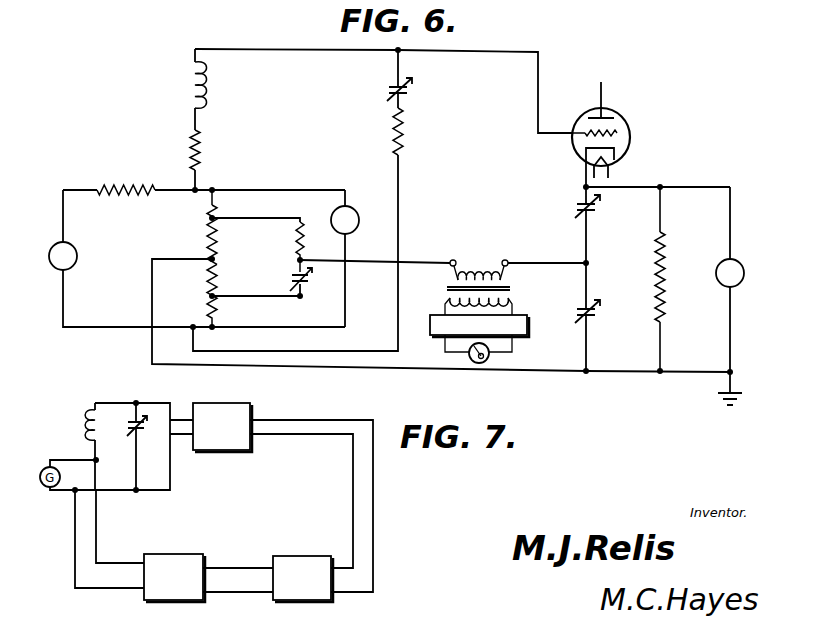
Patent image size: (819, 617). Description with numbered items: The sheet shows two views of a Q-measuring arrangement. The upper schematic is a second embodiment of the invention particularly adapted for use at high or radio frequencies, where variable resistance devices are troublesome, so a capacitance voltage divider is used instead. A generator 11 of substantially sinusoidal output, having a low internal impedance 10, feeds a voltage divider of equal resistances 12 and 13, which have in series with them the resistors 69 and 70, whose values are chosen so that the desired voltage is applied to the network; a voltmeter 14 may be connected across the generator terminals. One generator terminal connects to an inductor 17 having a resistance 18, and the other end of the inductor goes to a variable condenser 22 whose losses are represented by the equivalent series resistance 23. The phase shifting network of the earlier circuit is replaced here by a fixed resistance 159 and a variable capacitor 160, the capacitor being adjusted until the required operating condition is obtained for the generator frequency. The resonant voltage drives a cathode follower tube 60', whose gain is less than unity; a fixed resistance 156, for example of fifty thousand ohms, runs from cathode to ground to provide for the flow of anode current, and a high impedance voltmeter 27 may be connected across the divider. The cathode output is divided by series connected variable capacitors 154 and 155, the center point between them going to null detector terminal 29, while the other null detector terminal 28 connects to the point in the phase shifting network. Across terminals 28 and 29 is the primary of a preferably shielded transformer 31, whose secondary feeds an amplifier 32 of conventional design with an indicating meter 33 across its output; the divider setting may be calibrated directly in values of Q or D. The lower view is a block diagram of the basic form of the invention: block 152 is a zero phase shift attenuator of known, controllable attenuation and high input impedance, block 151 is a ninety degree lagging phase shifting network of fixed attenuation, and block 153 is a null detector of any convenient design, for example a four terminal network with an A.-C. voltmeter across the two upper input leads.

In FIG. 6, the internal impedance 10 is at (104, 184).
In FIG. 6, the generator 11 is at (52, 246).
In FIG. 6, the resistance 12 is at (207, 234).
In FIG. 6, the resistance 13 is at (208, 283).
In FIG. 6, the voltmeter 14 is at (360, 222).
In FIG. 6, the inductor 17 is at (186, 96).
In FIG. 6, the resistance 18 is at (188, 149).
In FIG. 6, the variable condenser 22 is at (412, 93).
In FIG. 6, the equivalent series resistance 23 is at (404, 135).
In FIG. 6, the high impedance voltmeter 27 is at (744, 274).
In FIG. 6, the null detector terminal 28 is at (452, 258).
In FIG. 6, the null detector terminal 29 is at (505, 258).
In FIG. 6, the transformer 31 is at (508, 290).
In FIG. 6, the amplifier 32 is at (527, 325).
In FIG. 6, the indicating meter 33 is at (490, 358).
In FIG. 6, the cathode follower tube 60' is at (620, 126).
In FIG. 6, the resistor 69 is at (217, 214).
In FIG. 6, the resistor 70 is at (219, 301).
In FIG. 6, the variable capacitor 154 is at (598, 212).
In FIG. 6, the variable capacitor 155 is at (590, 319).
In FIG. 6, the fixed resistance 156 is at (664, 240).
In FIG. 6, the fixed resistance 159 is at (296, 234).
In FIG. 6, the variable capacitor 160 is at (290, 278).
In FIG. 7, the 90 degree lagging phase shifting network 151 is at (174, 578).
In FIG. 7, the zero phase shift attenuator 152 is at (222, 427).
In FIG. 7, the null detector 153 is at (303, 579).